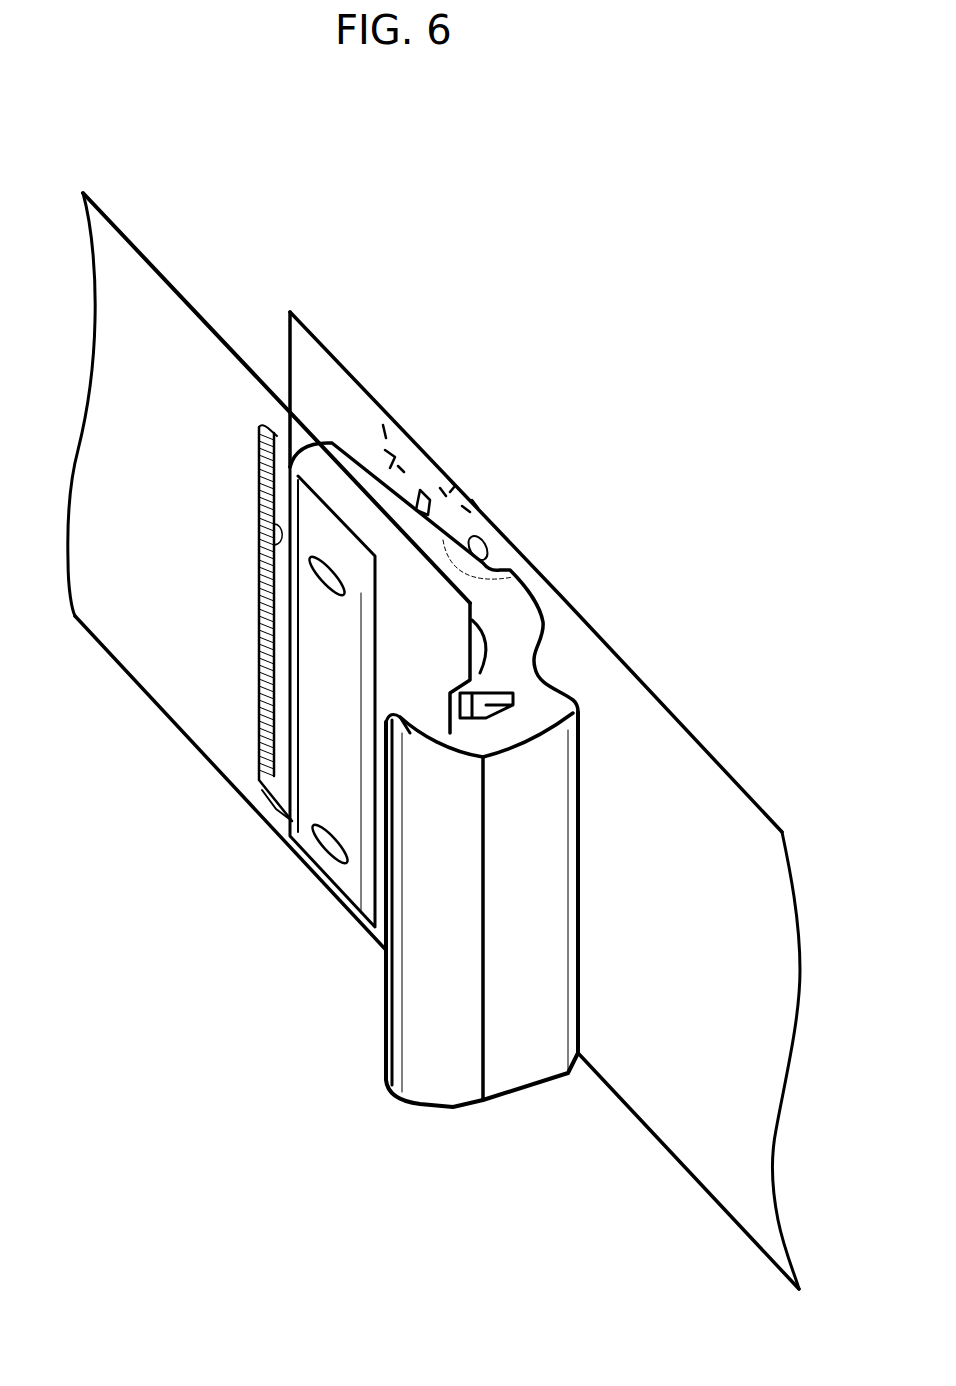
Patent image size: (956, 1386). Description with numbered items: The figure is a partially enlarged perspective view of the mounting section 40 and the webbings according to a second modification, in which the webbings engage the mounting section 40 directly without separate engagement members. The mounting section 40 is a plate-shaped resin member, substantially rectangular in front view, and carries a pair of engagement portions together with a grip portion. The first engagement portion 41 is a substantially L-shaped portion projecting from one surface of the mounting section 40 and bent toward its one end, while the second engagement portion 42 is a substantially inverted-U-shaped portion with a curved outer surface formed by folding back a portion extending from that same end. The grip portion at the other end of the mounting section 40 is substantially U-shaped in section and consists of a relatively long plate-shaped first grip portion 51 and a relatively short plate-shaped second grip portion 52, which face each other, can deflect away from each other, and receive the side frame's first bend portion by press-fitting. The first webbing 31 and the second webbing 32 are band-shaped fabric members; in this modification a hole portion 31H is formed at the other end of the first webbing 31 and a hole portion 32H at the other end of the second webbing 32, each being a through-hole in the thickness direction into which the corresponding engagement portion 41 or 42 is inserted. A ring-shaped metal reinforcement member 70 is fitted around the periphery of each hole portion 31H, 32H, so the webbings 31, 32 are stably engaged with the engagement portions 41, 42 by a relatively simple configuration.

The first webbing 31 is at (713, 753).
The hole portion 31H is at (485, 530).
The second webbing 32 is at (188, 296).
The hole portion 32H is at (272, 535).
The mounting section 40 is at (583, 906).
The first engagement portion 41 is at (513, 577).
The second engagement portion 42 is at (332, 523).
The first grip portion 51 is at (428, 1015).
The second grip portion 52 is at (490, 680).
The reinforcement member 70 is at (420, 492).